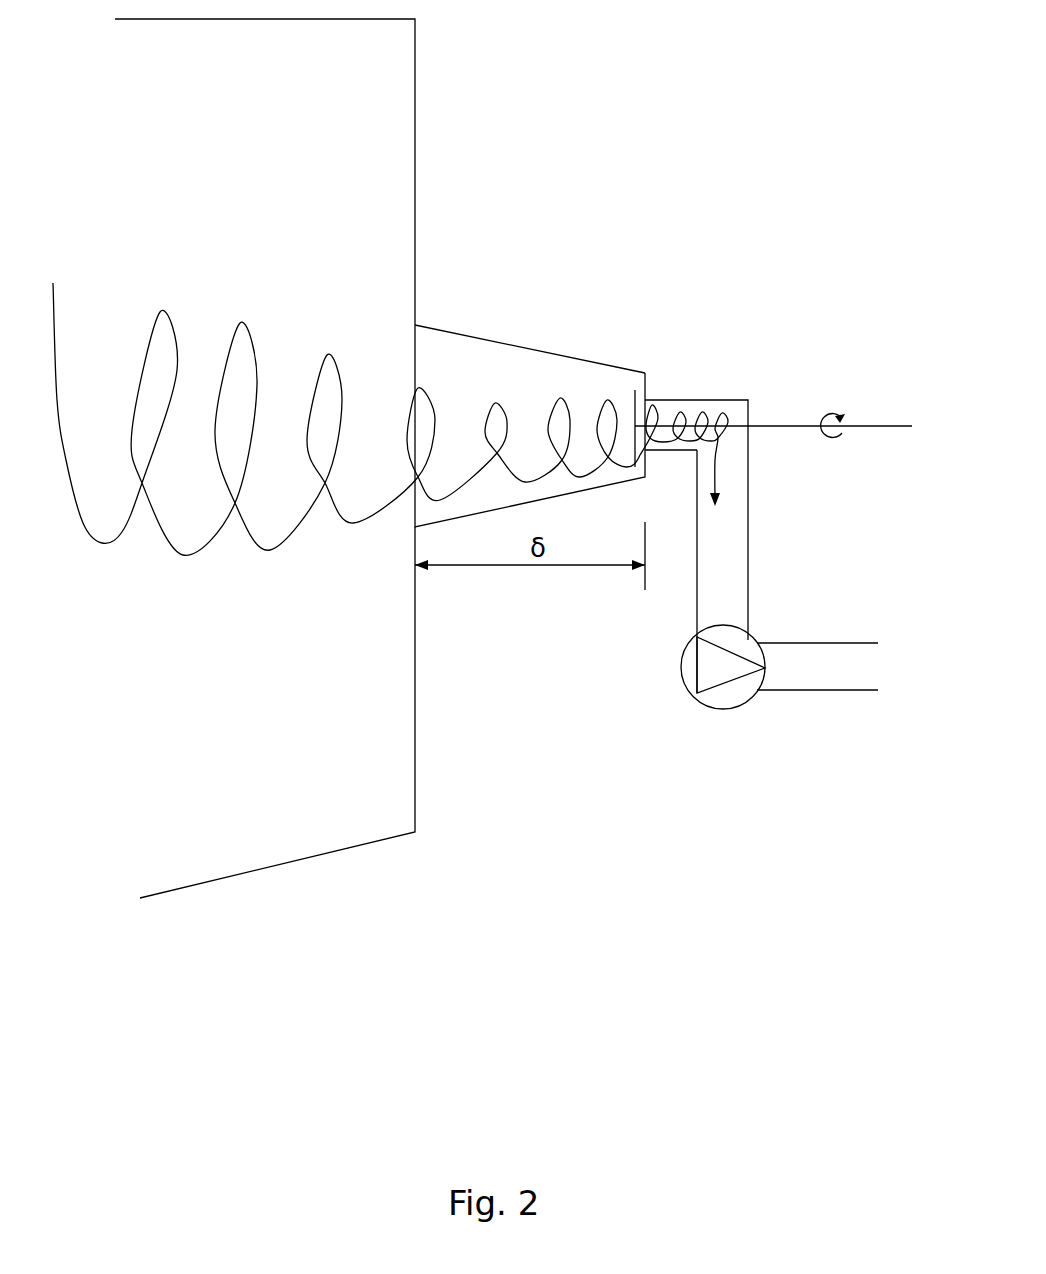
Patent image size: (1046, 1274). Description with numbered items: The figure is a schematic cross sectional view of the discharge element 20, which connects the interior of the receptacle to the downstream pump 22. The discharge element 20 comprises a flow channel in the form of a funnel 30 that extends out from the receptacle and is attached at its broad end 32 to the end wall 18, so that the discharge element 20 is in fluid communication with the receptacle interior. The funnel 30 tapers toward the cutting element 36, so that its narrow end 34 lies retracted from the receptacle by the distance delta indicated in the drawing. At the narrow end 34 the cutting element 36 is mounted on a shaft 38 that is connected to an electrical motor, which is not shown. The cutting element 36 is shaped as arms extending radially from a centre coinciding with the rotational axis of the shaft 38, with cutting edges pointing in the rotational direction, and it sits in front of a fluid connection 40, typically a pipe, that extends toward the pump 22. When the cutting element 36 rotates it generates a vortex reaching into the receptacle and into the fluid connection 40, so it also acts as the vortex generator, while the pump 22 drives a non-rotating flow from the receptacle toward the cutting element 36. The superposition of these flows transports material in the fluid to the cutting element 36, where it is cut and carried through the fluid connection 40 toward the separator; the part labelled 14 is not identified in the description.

The lower stator/housing part 14 is at (260, 882).
The end wall 18 is at (422, 211).
The discharge element 20 is at (571, 320).
The pump 22 is at (721, 720).
The funnel 30 is at (523, 361).
The broad end 32 is at (418, 347).
The narrow end 34 is at (653, 465).
The cutting element 36 is at (659, 402).
The shaft 38 is at (875, 413).
The fluid connection 40 is at (730, 558).